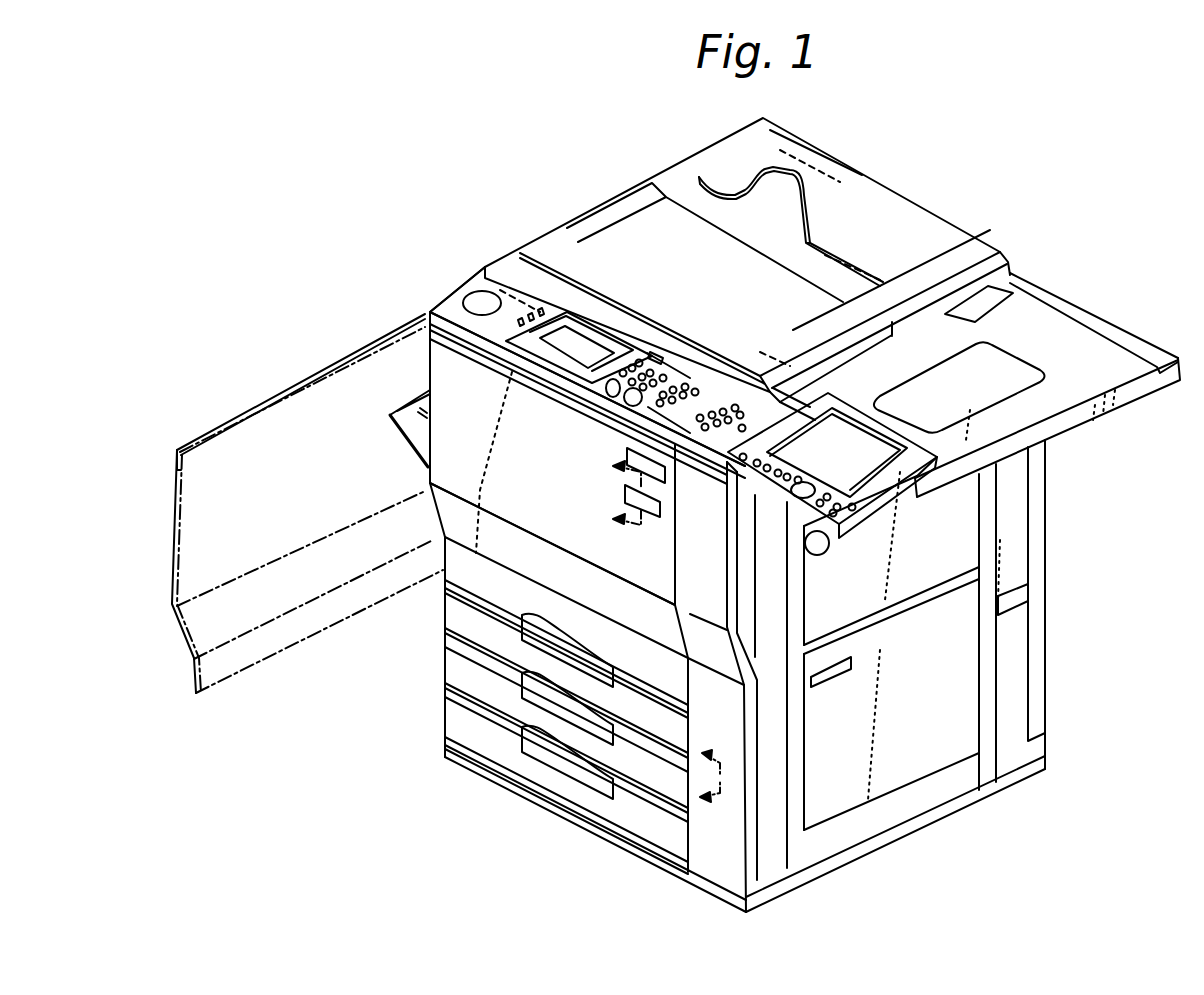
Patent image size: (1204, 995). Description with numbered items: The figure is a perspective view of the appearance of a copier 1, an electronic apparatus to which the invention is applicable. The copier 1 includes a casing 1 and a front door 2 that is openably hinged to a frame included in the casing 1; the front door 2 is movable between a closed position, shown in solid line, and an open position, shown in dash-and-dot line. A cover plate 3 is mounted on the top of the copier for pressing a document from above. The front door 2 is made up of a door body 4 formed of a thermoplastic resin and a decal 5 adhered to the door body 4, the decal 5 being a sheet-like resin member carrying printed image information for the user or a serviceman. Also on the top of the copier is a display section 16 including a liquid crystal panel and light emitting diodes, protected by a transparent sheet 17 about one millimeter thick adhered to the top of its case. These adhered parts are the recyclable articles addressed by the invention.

The copier 1 is at (770, 840).
The front door 2 is at (473, 577).
The cover plate 3 is at (947, 217).
The door body 4 is at (440, 354).
The decal 5 is at (663, 509).
The display section 16 is at (583, 322).
The transparent sheet 17 is at (607, 335).